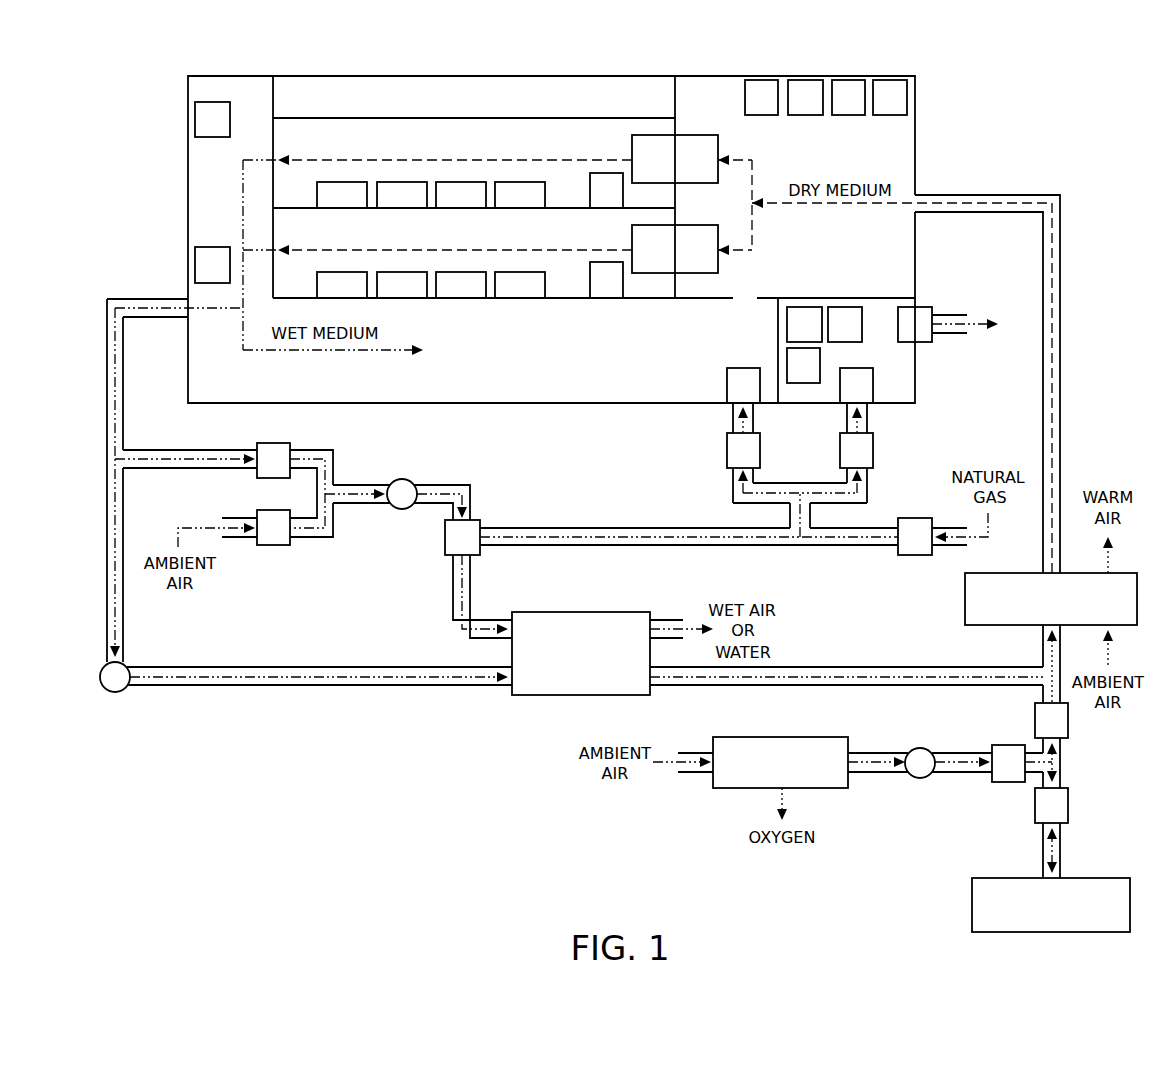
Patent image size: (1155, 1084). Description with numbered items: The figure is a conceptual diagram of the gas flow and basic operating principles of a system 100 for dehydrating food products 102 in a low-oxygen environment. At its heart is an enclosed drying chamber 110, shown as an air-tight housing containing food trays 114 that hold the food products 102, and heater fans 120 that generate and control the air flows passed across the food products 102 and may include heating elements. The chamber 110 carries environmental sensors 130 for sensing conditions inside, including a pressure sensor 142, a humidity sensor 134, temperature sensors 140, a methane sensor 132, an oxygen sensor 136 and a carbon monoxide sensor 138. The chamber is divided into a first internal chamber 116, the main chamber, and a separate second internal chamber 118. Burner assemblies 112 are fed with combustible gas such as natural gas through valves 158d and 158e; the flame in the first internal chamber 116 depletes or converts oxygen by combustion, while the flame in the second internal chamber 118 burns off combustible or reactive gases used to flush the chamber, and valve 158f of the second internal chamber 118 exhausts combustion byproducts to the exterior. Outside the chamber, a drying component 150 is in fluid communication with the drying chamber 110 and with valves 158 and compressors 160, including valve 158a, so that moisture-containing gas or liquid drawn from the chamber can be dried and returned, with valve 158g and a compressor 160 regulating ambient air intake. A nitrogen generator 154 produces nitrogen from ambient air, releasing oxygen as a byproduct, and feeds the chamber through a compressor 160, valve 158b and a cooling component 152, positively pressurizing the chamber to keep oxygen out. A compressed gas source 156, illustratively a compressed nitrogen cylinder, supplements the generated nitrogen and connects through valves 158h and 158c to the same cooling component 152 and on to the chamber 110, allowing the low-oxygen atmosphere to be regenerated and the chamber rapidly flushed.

The system 100 is at (1085, 87).
The enclosed drying chamber 110 is at (188, 92).
The burner assemblies 112 is at (727, 375).
The food trays 114 is at (290, 210).
The first internal chamber 116 is at (643, 382).
The second internal chamber 118 is at (885, 305).
The heater fans 120 is at (692, 135).
The environmental sensors 130 is at (922, 100).
The methane sensor 132 is at (762, 115).
The humidity sensor 134 is at (195, 262).
The oxygen sensor 136 is at (848, 115).
The carbon monoxide sensor 138 is at (890, 115).
The temperature sensor 140 is at (605, 215).
The pressure sensor 142 is at (195, 121).
The food products 102 is at (431, 240).
The drying component 150 is at (580, 612).
The cooling component 152 is at (965, 600).
The nitrogen generator 154 is at (780, 737).
The compressed gas source 156 is at (972, 905).
The valves 158 is at (272, 552).
The valve 158a is at (445, 537).
The valve 158b is at (1008, 782).
The valve 158c is at (1035, 720).
The valve 158d is at (727, 448).
The valve 158e is at (873, 450).
The valve 158f is at (928, 342).
The valve 158g is at (275, 443).
The valve 158h is at (1068, 806).
The compressors 160 is at (113, 692).